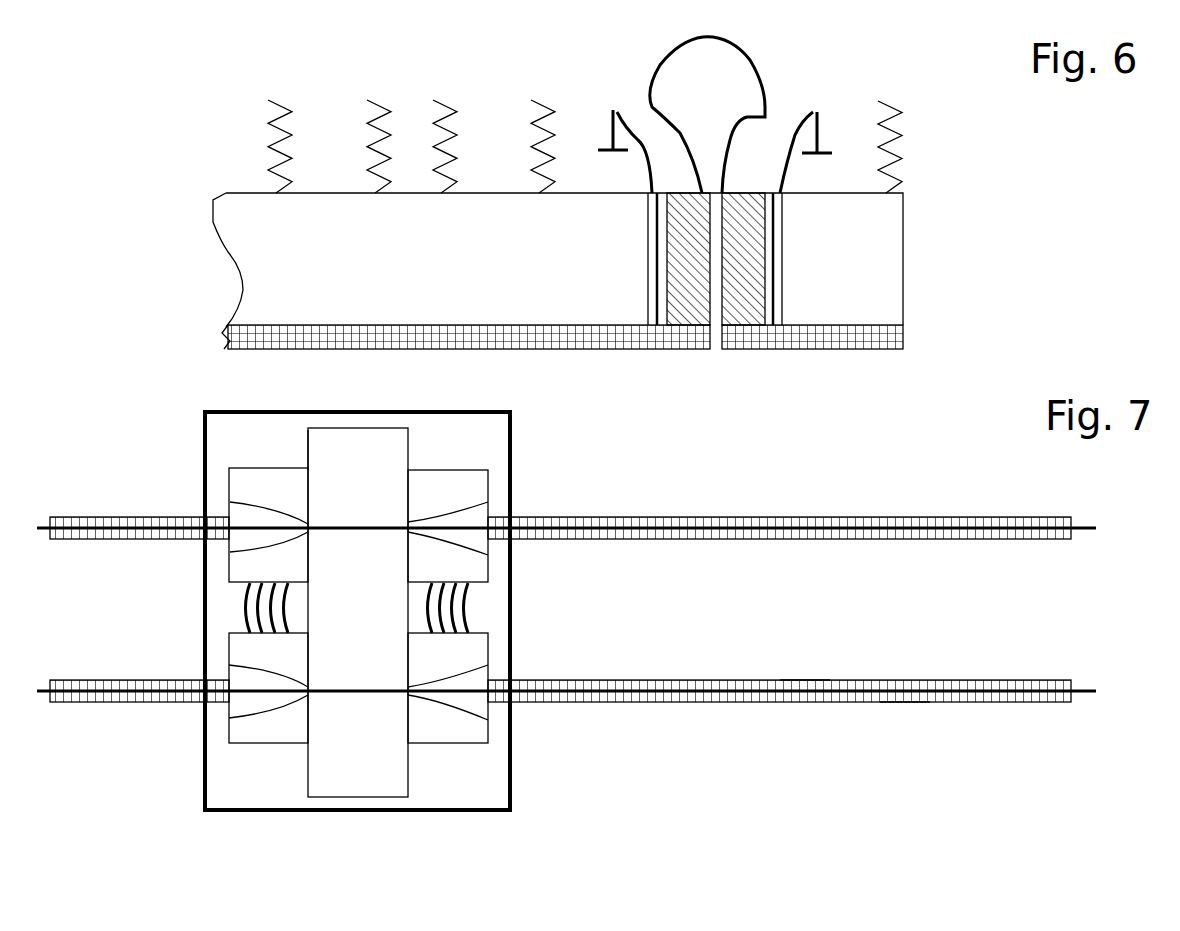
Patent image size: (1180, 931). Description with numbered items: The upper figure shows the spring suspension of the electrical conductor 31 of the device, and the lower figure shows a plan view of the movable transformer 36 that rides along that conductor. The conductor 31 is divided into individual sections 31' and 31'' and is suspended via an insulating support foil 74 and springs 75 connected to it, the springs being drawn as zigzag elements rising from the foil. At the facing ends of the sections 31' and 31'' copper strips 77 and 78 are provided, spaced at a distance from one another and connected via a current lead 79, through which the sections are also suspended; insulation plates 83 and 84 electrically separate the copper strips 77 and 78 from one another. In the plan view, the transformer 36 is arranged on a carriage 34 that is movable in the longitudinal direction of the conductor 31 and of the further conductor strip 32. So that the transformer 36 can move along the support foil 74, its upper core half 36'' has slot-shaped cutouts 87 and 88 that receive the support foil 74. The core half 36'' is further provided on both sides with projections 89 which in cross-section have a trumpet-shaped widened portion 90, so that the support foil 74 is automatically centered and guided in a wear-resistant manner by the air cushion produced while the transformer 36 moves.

In FIG. 6, the conductor 31 is at (901, 415).
In FIG. 7, the conductor 31 is at (566, 645).
In FIG. 6, the conductor section 31' is at (466, 363).
In FIG. 6, the conductor section 31'' is at (864, 310).
In FIG. 7, the second electrode strip 32 is at (803, 703).
In FIG. 7, the carriage 34 is at (514, 447).
In FIG. 7, the movable transformer 36 is at (366, 579).
In FIG. 7, the upper core half 36'' is at (200, 405).
In FIG. 6, the insulating support foil 74 is at (904, 232).
In FIG. 7, the insulating support foil 74 is at (907, 704).
In FIG. 6, the springs 75 is at (438, 102).
In FIG. 6, the copper strip 77 is at (678, 282).
In FIG. 6, the copper strip 78 is at (738, 282).
In FIG. 6, the current lead 79 is at (756, 58).
In FIG. 6, the insulation plate 83 is at (650, 276).
In FIG. 6, the insulation plate 84 is at (785, 310).
In FIG. 7, the slot-shaped cutout 87 is at (340, 698).
In FIG. 7, the slot-shaped cutout 88 is at (320, 523).
In FIG. 7, the projections 89 is at (428, 655).
In FIG. 7, the trumpet-shaped widened portion 90 is at (247, 702).